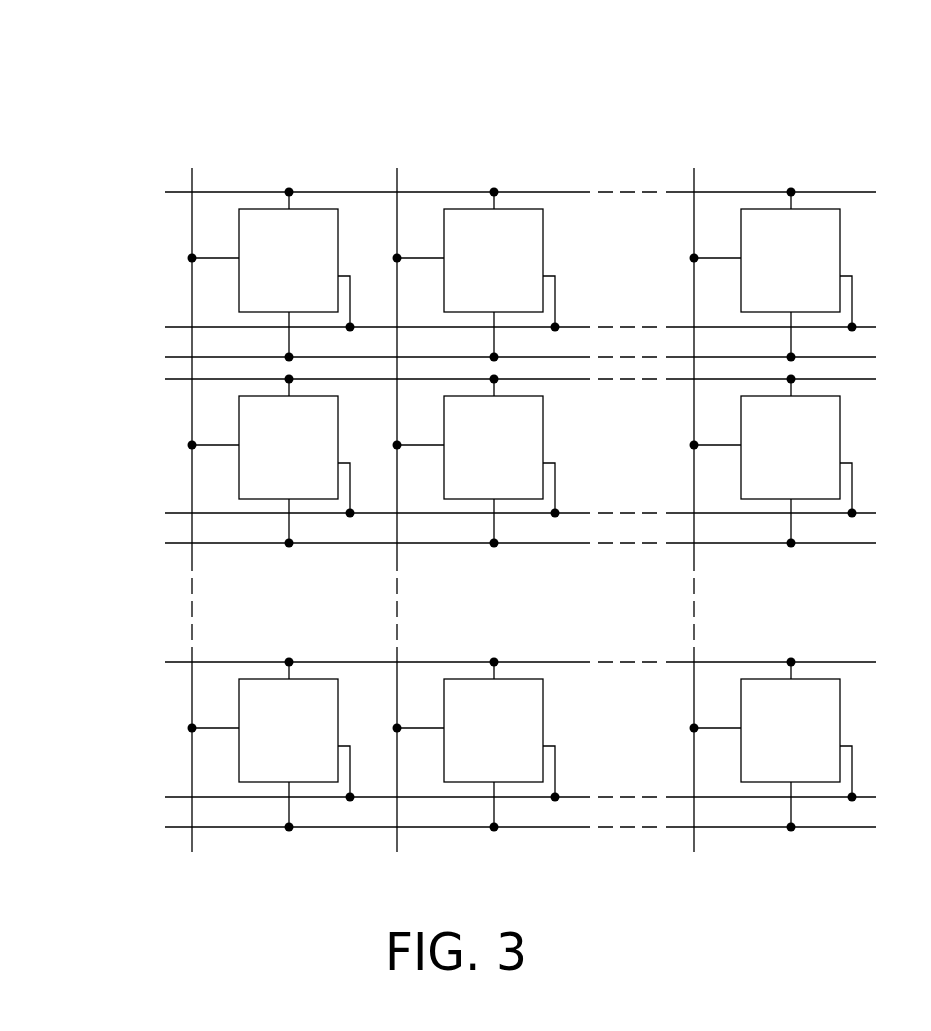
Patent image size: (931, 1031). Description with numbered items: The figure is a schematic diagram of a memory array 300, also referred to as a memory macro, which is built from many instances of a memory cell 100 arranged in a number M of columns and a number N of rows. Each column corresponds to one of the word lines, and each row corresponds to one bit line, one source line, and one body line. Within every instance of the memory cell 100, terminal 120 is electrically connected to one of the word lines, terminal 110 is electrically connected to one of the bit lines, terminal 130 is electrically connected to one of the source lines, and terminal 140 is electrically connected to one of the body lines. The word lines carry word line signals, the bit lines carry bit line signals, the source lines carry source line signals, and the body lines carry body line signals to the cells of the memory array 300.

The memory array 300 is at (832, 46).
The memory cell 100 is at (539, 495).
The terminal 110 is at (540, 451).
The terminal 120 is at (465, 509).
The terminal 130 is at (540, 557).
The terminal 140 is at (576, 529).